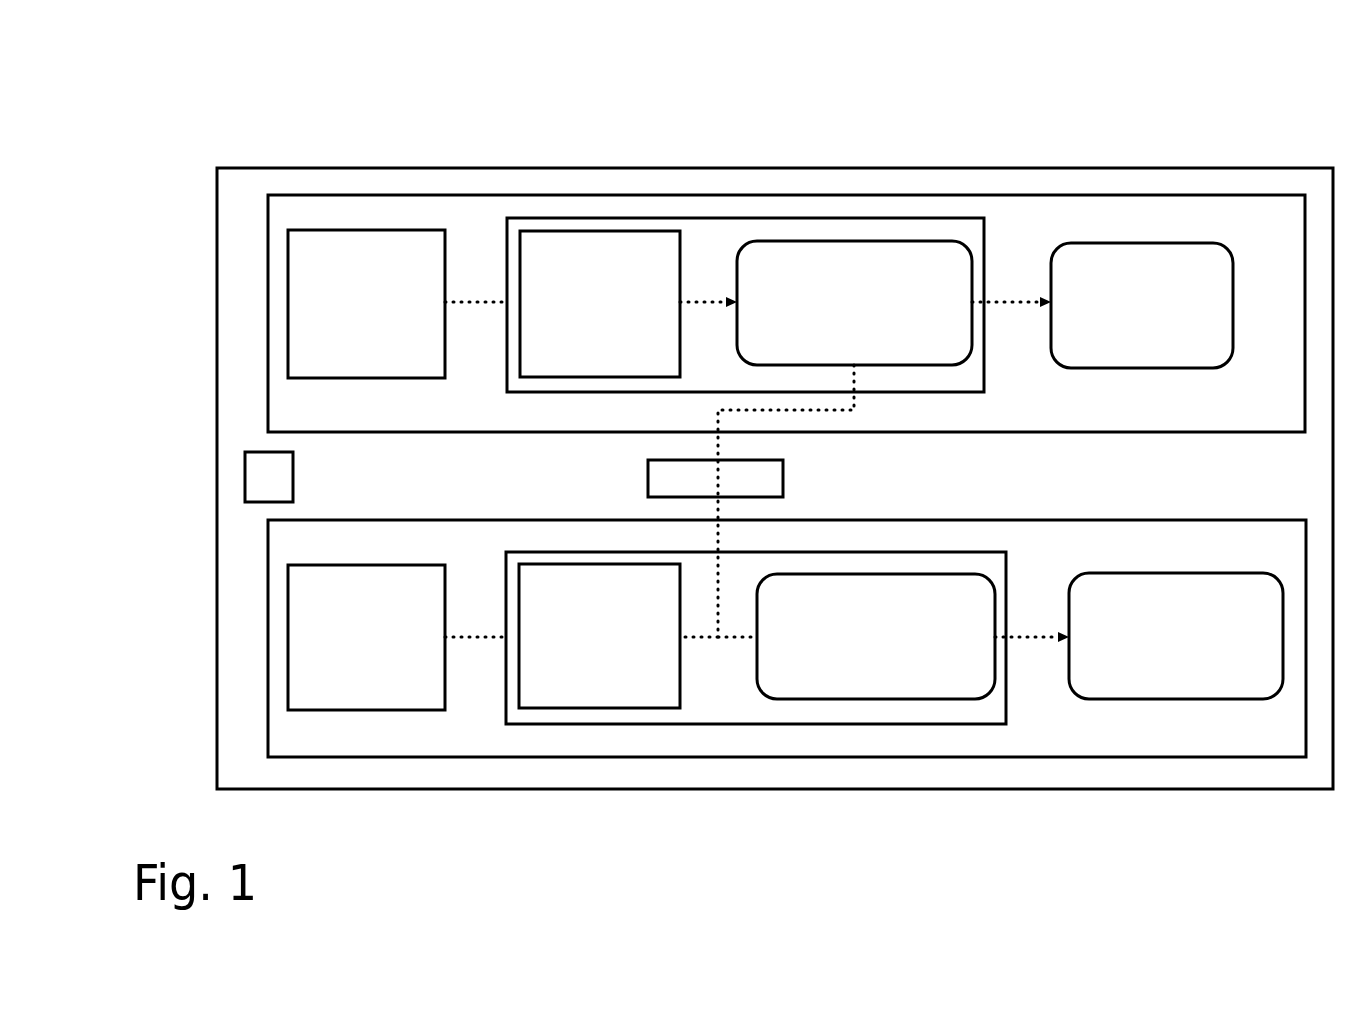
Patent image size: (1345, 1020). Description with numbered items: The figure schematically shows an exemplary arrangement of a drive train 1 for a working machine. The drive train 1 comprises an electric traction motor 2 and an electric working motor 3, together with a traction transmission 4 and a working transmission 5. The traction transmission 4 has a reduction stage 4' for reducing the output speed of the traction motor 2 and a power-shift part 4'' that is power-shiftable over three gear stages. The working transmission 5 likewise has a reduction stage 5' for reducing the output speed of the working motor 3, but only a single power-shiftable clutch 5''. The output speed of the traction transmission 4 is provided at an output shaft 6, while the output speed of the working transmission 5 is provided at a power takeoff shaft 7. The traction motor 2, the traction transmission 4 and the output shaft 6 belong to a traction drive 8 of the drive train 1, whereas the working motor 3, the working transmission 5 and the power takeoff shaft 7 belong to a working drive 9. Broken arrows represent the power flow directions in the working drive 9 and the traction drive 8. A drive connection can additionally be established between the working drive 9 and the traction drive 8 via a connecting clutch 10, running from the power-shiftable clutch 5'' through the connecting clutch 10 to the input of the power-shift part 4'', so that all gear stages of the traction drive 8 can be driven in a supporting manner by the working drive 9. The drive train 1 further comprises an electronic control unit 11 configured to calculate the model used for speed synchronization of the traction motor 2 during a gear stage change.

The drive train 1 is at (1232, 103).
The electric traction motor 2 is at (359, 687).
The electric working motor 3 is at (351, 258).
The traction transmission 4 is at (756, 710).
The reduction stage 4' is at (599, 709).
The power-shift part 4'' is at (876, 710).
The working transmission 5 is at (745, 233).
The reduction stage 5' is at (600, 236).
The power-shiftable clutch 5'' is at (854, 233).
The output shaft 6 is at (1166, 680).
The power takeoff shaft 7 is at (1118, 262).
The traction drive 8 is at (640, 743).
The working drive 9 is at (1013, 208).
The connecting clutch 10 is at (730, 478).
The electronic control unit 11 is at (267, 477).